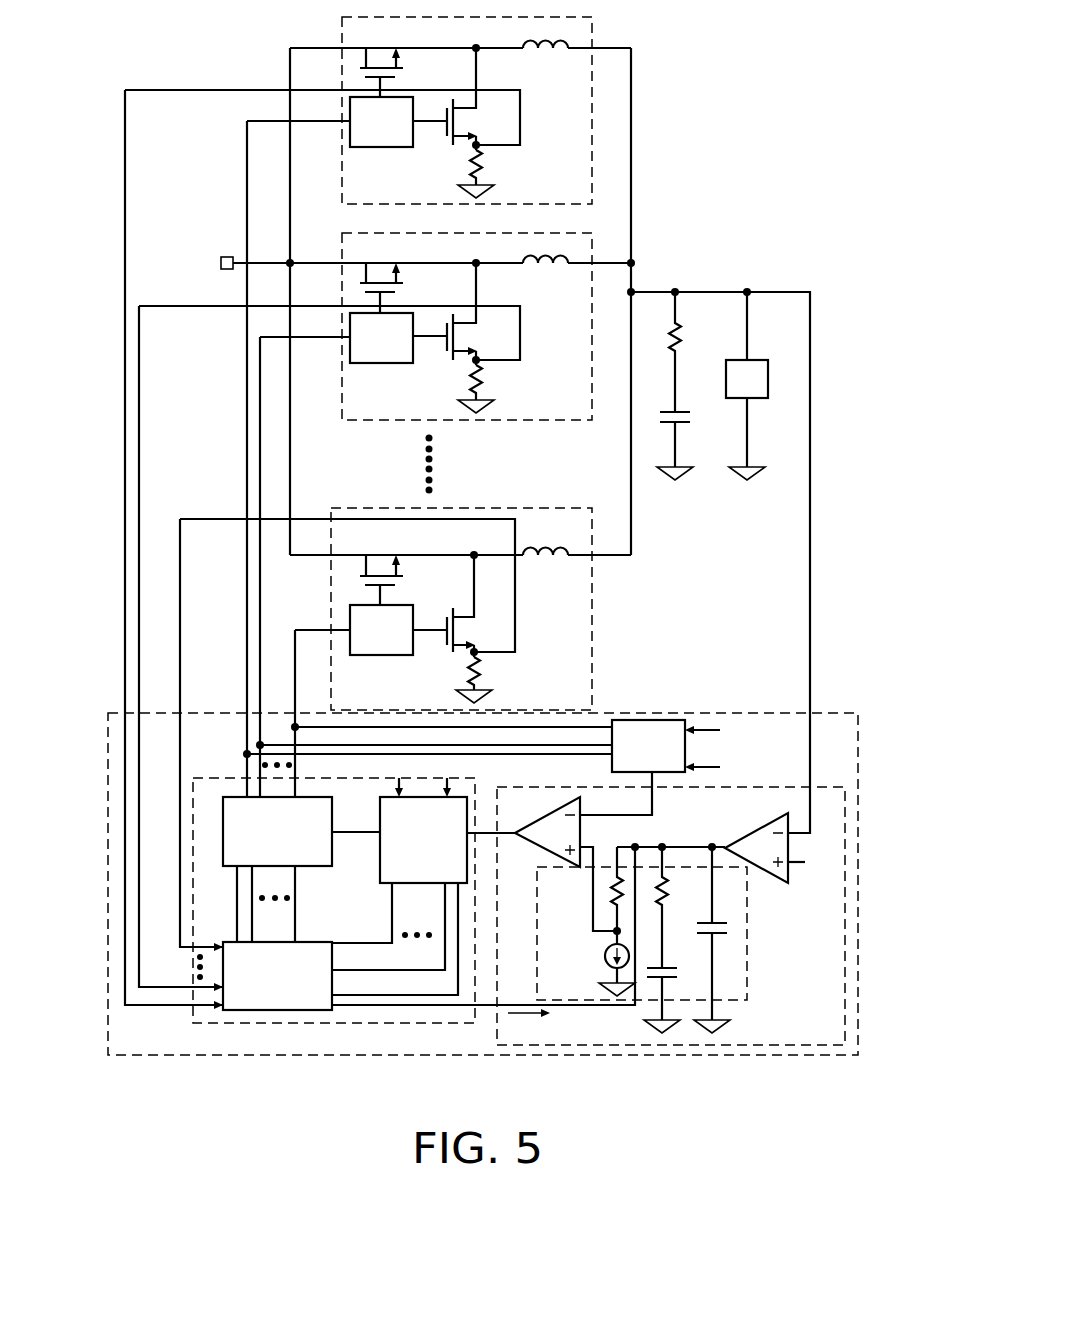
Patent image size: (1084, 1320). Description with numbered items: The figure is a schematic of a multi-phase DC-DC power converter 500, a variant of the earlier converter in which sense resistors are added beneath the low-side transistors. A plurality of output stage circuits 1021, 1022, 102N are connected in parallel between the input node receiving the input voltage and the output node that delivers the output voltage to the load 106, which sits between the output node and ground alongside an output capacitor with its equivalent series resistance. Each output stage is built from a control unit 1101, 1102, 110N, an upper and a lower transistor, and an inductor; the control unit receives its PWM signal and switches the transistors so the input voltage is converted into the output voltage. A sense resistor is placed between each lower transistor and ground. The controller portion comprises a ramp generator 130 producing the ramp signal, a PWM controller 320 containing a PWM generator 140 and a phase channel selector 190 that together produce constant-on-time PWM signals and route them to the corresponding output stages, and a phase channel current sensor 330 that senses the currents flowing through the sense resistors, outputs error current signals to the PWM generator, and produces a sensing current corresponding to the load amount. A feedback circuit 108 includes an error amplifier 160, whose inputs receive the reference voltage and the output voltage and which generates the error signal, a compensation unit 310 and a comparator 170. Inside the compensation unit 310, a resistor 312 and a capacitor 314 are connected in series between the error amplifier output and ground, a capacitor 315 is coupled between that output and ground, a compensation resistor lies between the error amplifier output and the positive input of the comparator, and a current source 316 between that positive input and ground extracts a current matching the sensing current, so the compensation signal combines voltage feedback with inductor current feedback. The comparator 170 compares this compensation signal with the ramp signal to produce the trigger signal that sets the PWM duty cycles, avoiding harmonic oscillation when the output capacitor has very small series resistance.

The multi-phase DC-DC power converter 500 is at (800, 54).
The output stage circuit 1021 is at (483, 109).
The output stage circuit 1022 is at (460, 359).
The output stage circuit 102N is at (477, 609).
The control unit 1101 is at (381, 135).
The control unit 1102 is at (381, 350).
The control unit 110N is at (381, 642).
The load 106 is at (760, 358).
The feedback circuit 108 is at (743, 1047).
The PWM controller 320 is at (228, 712).
The ramp generator 130 is at (652, 719).
The phase channel selector 190 is at (223, 816).
The phase channel current sensor 330 is at (222, 942).
The PWM generator 140 is at (484, 800).
The comparator 170 is at (537, 848).
The error amplifier 160 is at (766, 826).
The compensation unit 310 is at (752, 972).
The current source 316 is at (605, 948).
The resistor 312 is at (677, 907).
The capacitor 314 is at (670, 988).
The capacitor 315 is at (733, 927).